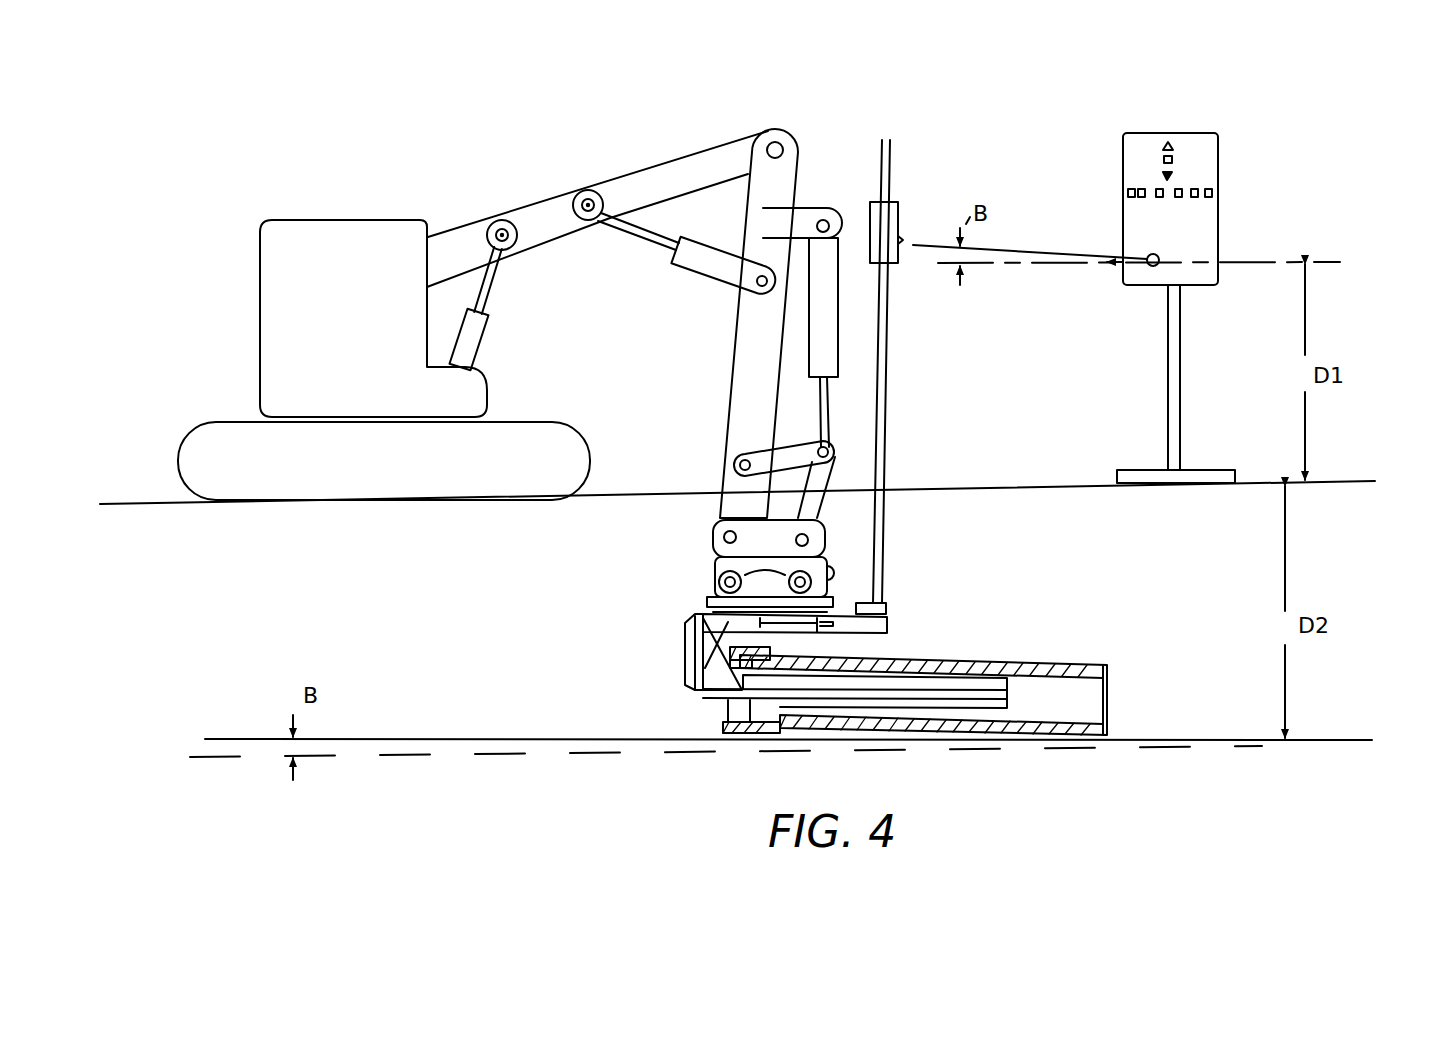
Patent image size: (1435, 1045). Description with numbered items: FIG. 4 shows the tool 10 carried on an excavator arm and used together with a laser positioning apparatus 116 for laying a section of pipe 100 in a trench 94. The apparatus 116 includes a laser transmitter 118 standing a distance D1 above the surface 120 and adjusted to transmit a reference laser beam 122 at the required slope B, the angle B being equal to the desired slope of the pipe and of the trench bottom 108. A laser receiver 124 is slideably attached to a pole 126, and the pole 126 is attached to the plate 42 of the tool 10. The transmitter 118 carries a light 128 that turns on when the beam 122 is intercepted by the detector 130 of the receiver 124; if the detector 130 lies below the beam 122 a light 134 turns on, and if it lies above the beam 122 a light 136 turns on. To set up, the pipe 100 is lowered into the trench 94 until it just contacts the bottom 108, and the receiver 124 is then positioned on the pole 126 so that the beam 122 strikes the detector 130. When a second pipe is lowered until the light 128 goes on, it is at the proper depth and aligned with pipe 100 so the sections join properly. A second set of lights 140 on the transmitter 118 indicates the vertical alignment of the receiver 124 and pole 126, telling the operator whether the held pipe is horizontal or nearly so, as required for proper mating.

The tool 10 is at (660, 637).
The plate 42 is at (890, 617).
The trench 94 is at (1132, 548).
The section of pipe 100 is at (1047, 663).
The trench bottom 108 is at (452, 738).
The laser positioning apparatus 116 is at (952, 364).
The laser transmitter 118 is at (1220, 233).
The surface 120 is at (1368, 480).
The reference laser beam 122 is at (1032, 248).
The laser receiver 124 is at (900, 210).
The pole 126 is at (892, 333).
The light 128 is at (1173, 160).
The detector 130 is at (903, 238).
The light 134 is at (1178, 175).
The light 136 is at (1173, 141).
The second set of lights 140 is at (1228, 195).